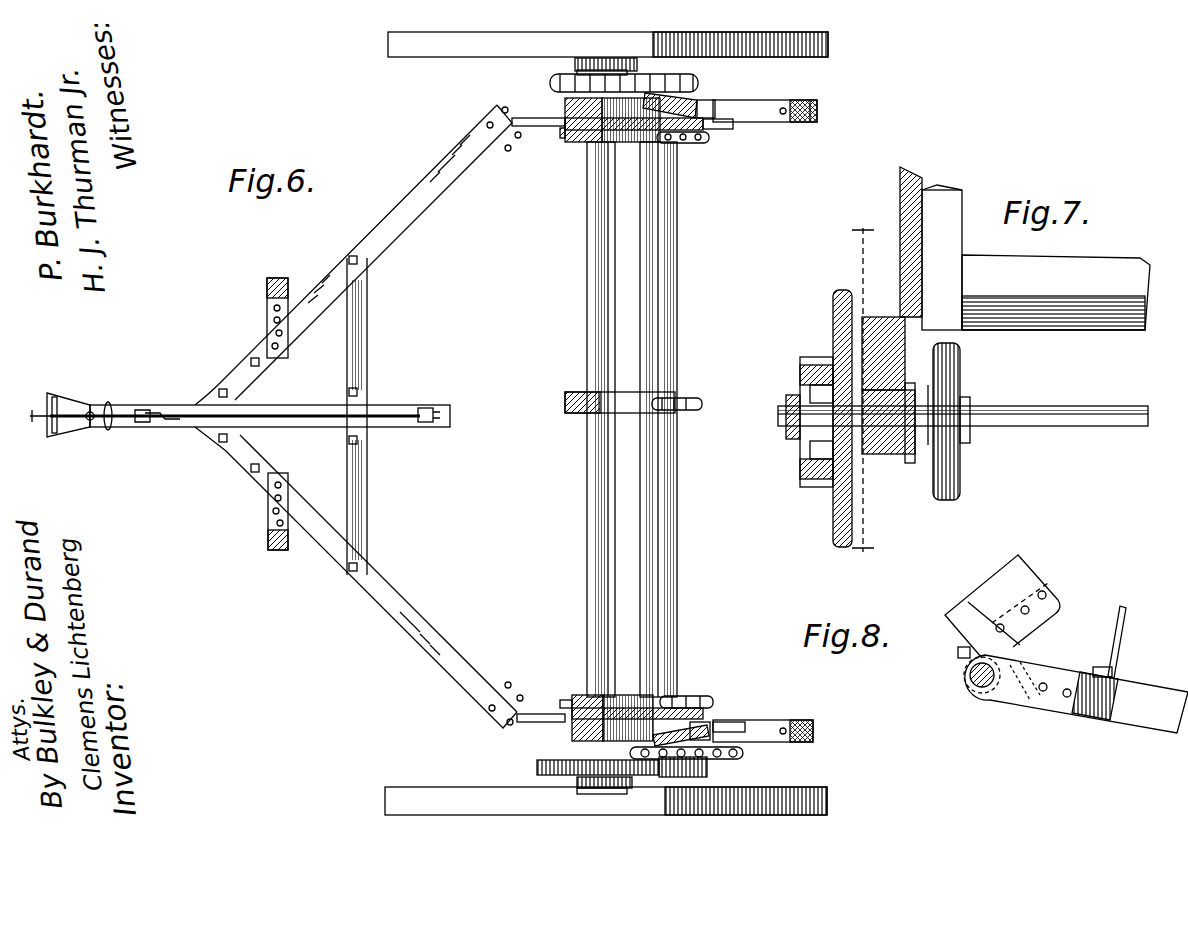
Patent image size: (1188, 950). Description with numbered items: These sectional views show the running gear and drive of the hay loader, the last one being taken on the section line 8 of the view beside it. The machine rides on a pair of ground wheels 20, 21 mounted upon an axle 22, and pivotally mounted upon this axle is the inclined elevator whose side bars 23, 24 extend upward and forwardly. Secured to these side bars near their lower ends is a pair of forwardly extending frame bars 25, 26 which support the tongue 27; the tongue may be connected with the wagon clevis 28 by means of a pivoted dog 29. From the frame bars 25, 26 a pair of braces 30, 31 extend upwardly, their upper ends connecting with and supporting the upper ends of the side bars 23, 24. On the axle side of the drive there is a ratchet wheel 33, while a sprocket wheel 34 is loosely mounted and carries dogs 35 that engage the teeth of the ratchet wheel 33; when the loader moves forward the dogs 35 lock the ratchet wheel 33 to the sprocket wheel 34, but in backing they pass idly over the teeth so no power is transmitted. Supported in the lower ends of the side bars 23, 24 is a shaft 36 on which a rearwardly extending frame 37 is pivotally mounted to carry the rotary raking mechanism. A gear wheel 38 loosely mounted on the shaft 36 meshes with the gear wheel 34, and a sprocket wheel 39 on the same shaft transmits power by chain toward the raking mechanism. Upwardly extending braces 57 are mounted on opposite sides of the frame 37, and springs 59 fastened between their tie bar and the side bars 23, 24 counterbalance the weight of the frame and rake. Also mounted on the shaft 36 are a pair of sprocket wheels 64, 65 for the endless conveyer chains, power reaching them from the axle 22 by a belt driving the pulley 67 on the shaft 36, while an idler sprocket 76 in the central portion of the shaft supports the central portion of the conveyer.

In FIG. 6, the ground wheel 20 is at (828, 796).
In FIG. 6, the ground wheel 21 is at (828, 50).
In FIG. 6, the axle 22 is at (590, 325).
In FIG. 6, the side bar 23 is at (742, 132).
In FIG. 6, the side bar 24 is at (705, 735).
In FIG. 7, the side bar 24 is at (914, 180).
In FIG. 8, the side bar 24 is at (1033, 583).
In FIG. 6, the frame bar 25 is at (432, 630).
In FIG. 6, the frame bar 26 is at (405, 204).
In FIG. 6, the tongue 27 is at (418, 388).
In FIG. 6, the wagon clevis 28 is at (76, 405).
In FIG. 6, the pivoted dog 29 is at (145, 412).
In FIG. 6, the brace 30 is at (292, 270).
In FIG. 6, the brace 31 is at (284, 556).
In FIG. 6, the ratchet wheel 33 is at (582, 62).
In FIG. 6, the sprocket wheel 34 is at (540, 766).
In FIG. 6, the dog 35 is at (628, 72).
In FIG. 6, the shaft 36 is at (678, 356).
In FIG. 7, the shaft 36 is at (1090, 404).
In FIG. 6, the frame 37 is at (820, 92).
In FIG. 8, the frame 37 is at (1157, 697).
In FIG. 6, the gear wheel 38 is at (708, 768).
In FIG. 7, the gear wheel 38 is at (812, 359).
In FIG. 6, the sprocket wheel 39 is at (743, 753).
In FIG. 7, the sprocket wheel 39 is at (836, 292).
In FIG. 8, the brace 57 is at (1127, 620).
In FIG. 6, the spring 59 is at (722, 112).
In FIG. 6, the sprocket wheel 64 is at (700, 697).
In FIG. 7, the sprocket wheel 64 is at (962, 386).
In FIG. 6, the sprocket wheel 65 is at (692, 146).
In FIG. 6, the pulley 67 is at (697, 100).
In FIG. 6, the idler sprocket 76 is at (710, 405).
In FIG. 7, the section line 8 is at (861, 394).